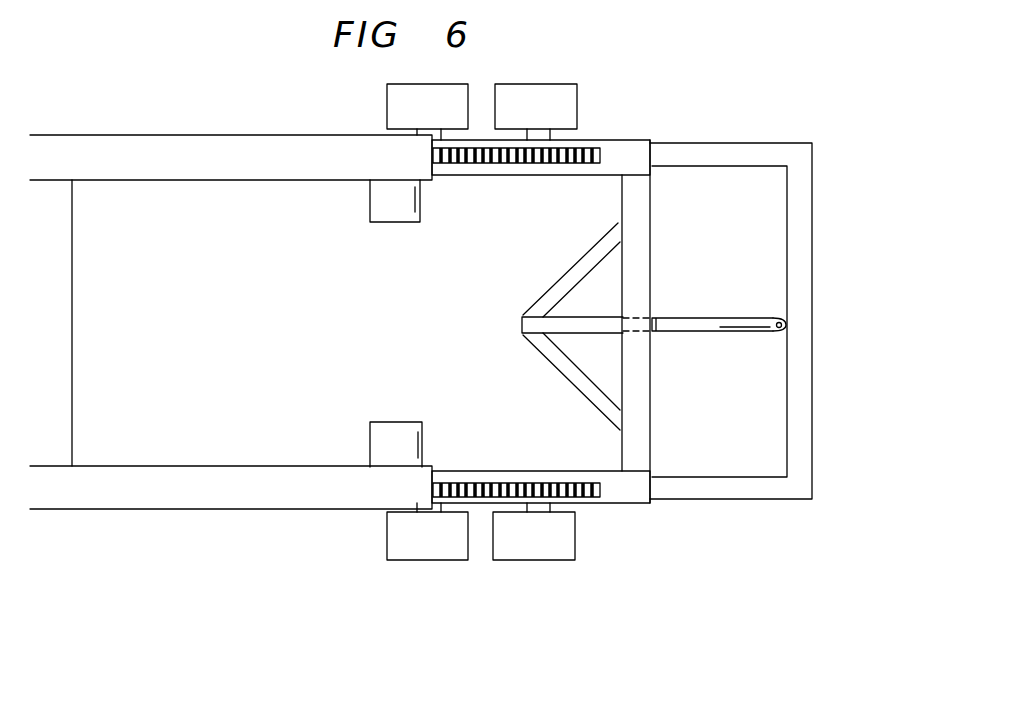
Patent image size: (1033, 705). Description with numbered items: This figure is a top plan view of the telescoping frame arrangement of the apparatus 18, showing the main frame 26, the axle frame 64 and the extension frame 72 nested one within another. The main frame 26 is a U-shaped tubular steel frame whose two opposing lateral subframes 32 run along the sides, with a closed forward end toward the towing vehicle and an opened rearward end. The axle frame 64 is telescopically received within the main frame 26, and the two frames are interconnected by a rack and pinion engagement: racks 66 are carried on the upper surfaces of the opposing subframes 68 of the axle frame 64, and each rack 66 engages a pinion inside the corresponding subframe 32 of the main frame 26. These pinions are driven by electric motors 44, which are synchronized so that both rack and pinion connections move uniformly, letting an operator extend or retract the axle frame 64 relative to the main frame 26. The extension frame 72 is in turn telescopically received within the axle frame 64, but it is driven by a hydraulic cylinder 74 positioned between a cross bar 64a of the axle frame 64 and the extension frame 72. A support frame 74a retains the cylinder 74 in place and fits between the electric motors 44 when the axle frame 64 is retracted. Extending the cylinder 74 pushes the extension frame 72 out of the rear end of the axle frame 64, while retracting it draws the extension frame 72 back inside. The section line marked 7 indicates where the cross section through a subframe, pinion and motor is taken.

The apparatus 18 is at (670, 100).
The main frame 26 is at (231, 322).
The lateral subframes 32 is at (278, 178).
The electric motors 44 is at (385, 222).
The racks 66 is at (478, 155).
The subframes 68 is at (622, 138).
The axle frame 64 is at (637, 502).
The cross bar 64a is at (647, 383).
The extension frame 72 is at (807, 415).
The hydraulic cylinder 74 is at (707, 315).
The support frame 74a is at (570, 267).
The section line 7- 7 is at (448, 420).